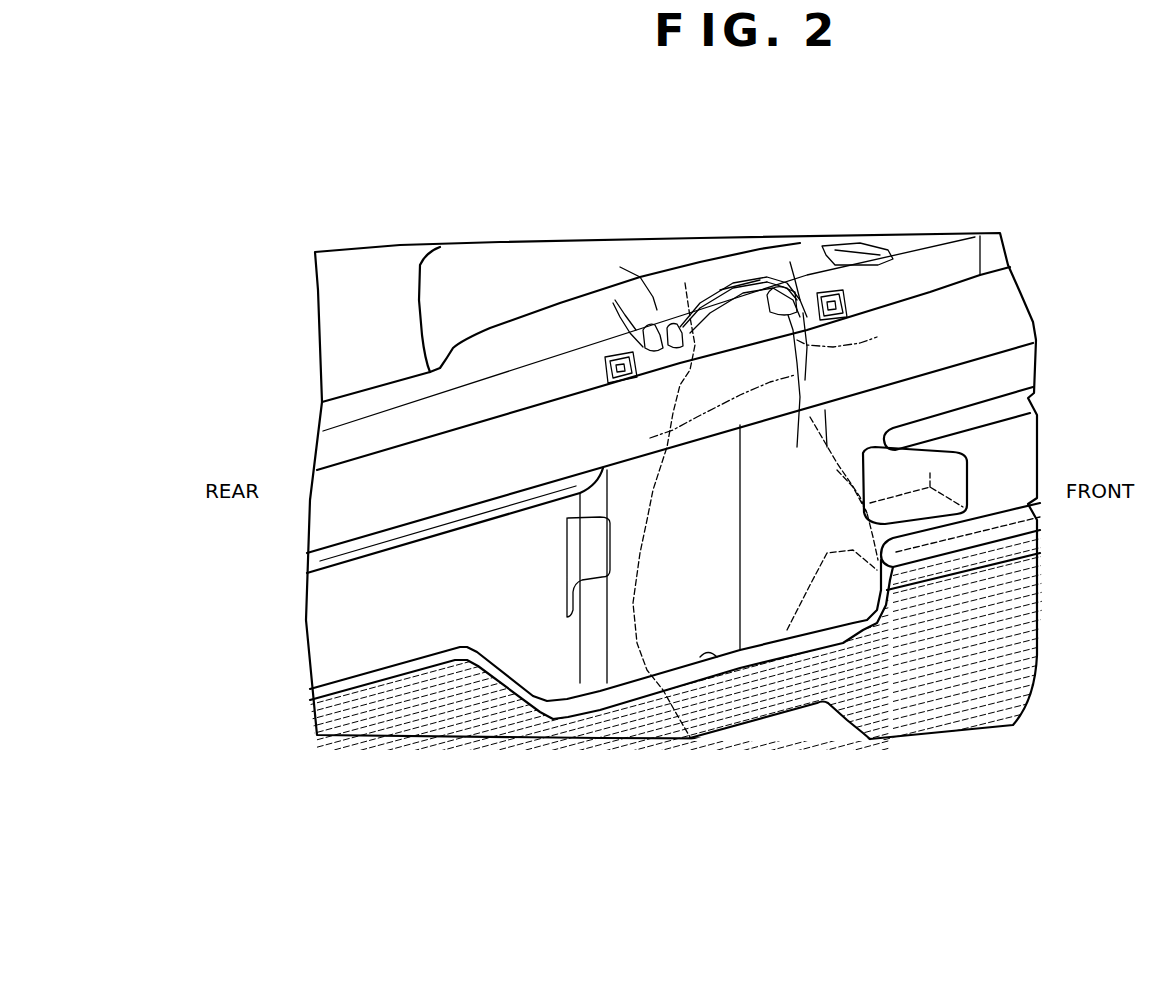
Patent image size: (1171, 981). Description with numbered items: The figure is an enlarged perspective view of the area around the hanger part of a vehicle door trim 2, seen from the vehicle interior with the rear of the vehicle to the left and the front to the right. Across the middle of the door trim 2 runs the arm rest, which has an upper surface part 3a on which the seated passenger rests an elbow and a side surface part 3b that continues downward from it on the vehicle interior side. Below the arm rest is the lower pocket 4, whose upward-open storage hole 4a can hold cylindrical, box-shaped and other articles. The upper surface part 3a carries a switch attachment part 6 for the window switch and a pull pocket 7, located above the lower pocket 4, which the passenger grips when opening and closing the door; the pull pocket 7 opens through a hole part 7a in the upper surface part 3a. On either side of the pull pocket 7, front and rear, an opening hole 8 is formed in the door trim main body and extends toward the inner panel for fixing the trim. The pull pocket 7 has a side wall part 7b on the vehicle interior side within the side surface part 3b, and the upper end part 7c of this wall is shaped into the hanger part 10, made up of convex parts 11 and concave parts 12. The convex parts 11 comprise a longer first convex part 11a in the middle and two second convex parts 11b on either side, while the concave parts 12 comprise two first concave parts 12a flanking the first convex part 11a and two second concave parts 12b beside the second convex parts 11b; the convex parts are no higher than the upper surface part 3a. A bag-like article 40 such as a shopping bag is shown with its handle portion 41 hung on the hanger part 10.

The door trim 2 is at (398, 603).
The upper surface part 3a is at (500, 343).
The side surface part 3b is at (403, 430).
The lower pocket 4 is at (719, 660).
The storage hole 4a is at (617, 705).
The switch attachment part 6 is at (857, 248).
The pull pocket 7 is at (652, 330).
The hole part 7a is at (646, 323).
The side wall part 7b is at (680, 355).
The upper end part 7c is at (800, 440).
The opening hole 8 is at (850, 300).
The hanger part 10 is at (813, 120).
The convex parts 11 is at (843, 162).
The first convex part 11a is at (720, 290).
The second convex parts 11b is at (790, 262).
The concave parts 12 is at (715, 162).
The first concave parts 12a is at (685, 283).
The second concave parts 12b is at (653, 300).
The bag-like item/article 40 is at (867, 457).
The handle portion 41 is at (877, 337).